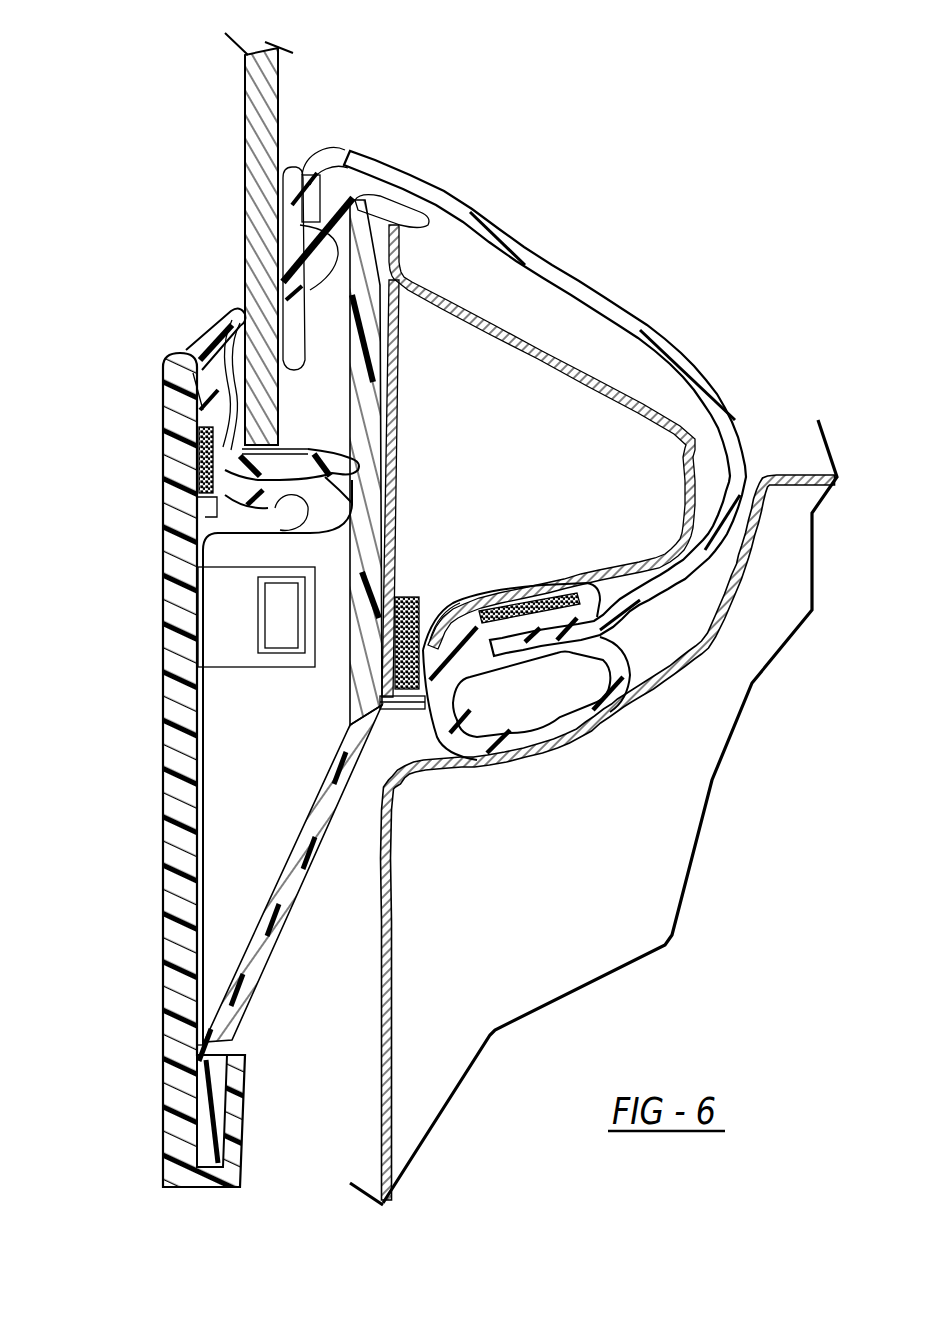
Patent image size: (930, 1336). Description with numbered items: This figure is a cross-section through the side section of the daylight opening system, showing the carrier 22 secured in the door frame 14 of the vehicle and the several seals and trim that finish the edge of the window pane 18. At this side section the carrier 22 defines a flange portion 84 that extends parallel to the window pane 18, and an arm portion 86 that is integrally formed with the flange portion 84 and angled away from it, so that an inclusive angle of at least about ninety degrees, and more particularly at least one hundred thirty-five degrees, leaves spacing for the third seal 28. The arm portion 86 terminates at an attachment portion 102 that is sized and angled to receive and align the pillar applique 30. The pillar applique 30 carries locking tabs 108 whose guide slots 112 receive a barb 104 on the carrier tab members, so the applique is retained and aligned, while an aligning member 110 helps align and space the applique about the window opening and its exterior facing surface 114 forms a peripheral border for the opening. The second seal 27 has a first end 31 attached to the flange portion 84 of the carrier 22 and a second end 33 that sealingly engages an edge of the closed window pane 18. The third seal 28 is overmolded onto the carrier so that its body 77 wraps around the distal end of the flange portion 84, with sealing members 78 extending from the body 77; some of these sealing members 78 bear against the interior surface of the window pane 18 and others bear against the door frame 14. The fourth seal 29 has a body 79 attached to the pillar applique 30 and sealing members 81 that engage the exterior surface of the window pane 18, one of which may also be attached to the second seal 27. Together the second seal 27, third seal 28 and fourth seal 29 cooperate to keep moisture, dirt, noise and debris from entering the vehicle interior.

The door frame 14 is at (537, 257).
The window pane 18 is at (245, 108).
The carrier 22 is at (323, 862).
The second seal 27 is at (362, 502).
The third seal 28 is at (323, 272).
The fourth seal 29 is at (199, 333).
The pillar applique 30 is at (167, 812).
The first end 31 is at (360, 468).
The second end 33 is at (233, 457).
The body 77 is at (337, 195).
The sealing members 78 is at (290, 170).
The body 79 is at (213, 385).
The sealing members 81 is at (235, 318).
The flange portion 84 is at (370, 357).
The arm portion 86 is at (262, 957).
The attachment portion 102 is at (213, 1073).
The barb 104 is at (280, 635).
The locking tabs 108 is at (236, 643).
The aligning member 110 is at (195, 537).
The guide slots 112 is at (307, 627).
The exterior facing surface 114 is at (155, 912).